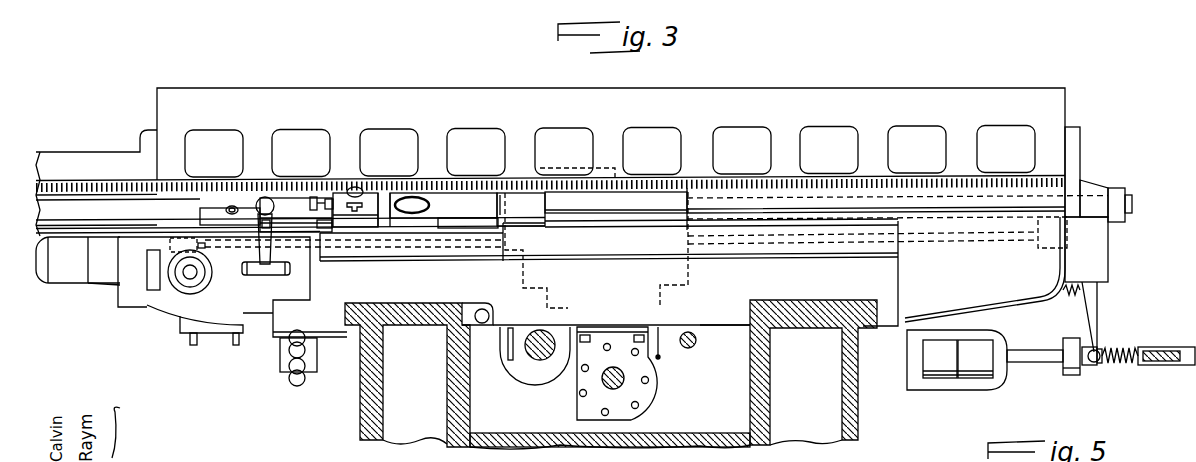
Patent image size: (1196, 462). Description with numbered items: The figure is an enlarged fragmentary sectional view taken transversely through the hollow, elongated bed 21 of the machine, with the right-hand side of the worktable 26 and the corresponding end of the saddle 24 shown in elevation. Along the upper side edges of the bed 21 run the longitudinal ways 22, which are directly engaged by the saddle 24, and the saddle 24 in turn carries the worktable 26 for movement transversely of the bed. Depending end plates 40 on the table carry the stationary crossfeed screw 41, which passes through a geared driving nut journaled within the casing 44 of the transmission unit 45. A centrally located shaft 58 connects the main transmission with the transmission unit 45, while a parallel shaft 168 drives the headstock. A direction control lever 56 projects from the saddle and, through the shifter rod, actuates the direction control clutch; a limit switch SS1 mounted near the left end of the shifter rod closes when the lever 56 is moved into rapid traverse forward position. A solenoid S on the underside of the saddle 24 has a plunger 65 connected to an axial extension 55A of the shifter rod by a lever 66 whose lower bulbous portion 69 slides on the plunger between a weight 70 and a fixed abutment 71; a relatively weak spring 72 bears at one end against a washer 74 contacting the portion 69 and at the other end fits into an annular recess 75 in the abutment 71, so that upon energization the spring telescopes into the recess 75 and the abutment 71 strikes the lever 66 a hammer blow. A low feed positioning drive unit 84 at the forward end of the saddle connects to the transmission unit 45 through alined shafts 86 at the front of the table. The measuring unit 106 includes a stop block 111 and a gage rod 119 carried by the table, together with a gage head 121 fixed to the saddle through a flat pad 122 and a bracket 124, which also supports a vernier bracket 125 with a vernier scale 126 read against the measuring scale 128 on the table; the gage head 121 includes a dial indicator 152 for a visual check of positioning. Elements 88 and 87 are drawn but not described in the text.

The worktable 26 is at (476, 88).
The measuring unit 106 is at (434, 138).
The measuring scale 128 is at (104, 190).
The stop block 111 is at (200, 215).
The direction control lever 56 is at (262, 205).
The gage rod 119 is at (302, 222).
The vernier bracket 125 is at (342, 203).
The vernier scale 126 is at (366, 190).
The dial indicator 152 is at (431, 201).
The gage head 121 is at (498, 207).
The bracket 124 is at (425, 224).
The flat pad 122 is at (359, 237).
The limit switch SS1 is at (170, 246).
The low feed positioning drive unit 84 is at (117, 315).
The end block 88 is at (65, 278).
The alined shafts 86 is at (195, 277).
The bracket 87 is at (147, 306).
The longitudinal guides or ways 22 is at (406, 302).
The main frame or bed 21 is at (360, 418).
The saddle 24 is at (656, 373).
The shaft 58 is at (620, 386).
The transmission unit 45 is at (659, 358).
The casing 44 is at (660, 309).
The shaft 168 is at (722, 341).
The axial extension 55A is at (958, 243).
The end plates 40 is at (1079, 165).
The crossfeed screw 41 is at (1134, 206).
The solenoid S is at (976, 380).
The plunger 65 is at (1043, 363).
The weight 70 is at (1070, 377).
The bulbous portion 69 is at (1095, 367).
The lever 66 is at (1099, 320).
The washer 74 is at (1102, 350).
The spring 72 is at (1123, 350).
The abutment 71 is at (1182, 348).
The annular recess 75 is at (1160, 366).